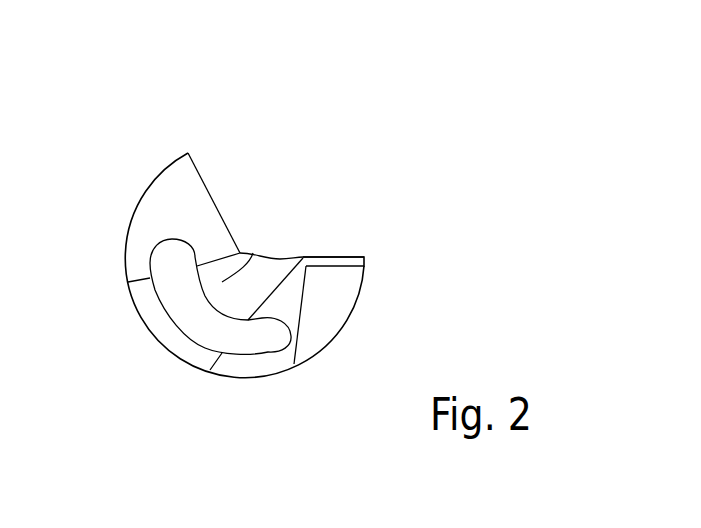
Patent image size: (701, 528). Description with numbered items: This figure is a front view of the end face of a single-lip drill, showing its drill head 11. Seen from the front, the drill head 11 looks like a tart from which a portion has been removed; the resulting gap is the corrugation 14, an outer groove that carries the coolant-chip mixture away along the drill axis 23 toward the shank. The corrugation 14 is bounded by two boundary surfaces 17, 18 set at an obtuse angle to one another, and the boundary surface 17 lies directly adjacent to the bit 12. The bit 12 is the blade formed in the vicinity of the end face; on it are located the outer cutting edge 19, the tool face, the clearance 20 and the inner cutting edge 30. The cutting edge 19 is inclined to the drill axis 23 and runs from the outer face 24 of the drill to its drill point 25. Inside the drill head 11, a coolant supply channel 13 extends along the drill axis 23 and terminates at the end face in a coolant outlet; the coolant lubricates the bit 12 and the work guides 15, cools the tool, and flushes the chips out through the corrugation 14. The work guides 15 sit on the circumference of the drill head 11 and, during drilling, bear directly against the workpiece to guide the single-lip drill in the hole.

The drill head 11 is at (421, 149).
The bit 12 is at (343, 240).
The coolant supply channel 13 is at (257, 340).
The corrugation 14 is at (250, 196).
The work guides 15 is at (152, 176).
The boundary surface 17 is at (267, 252).
The boundary surface 18 is at (188, 153).
The cutting edge 19 is at (352, 256).
The clearance 20 is at (330, 315).
The drill axis 23 is at (243, 250).
The outer face 24 is at (358, 295).
The drill point 25 is at (302, 257).
The inner cutting edge 30 is at (222, 282).